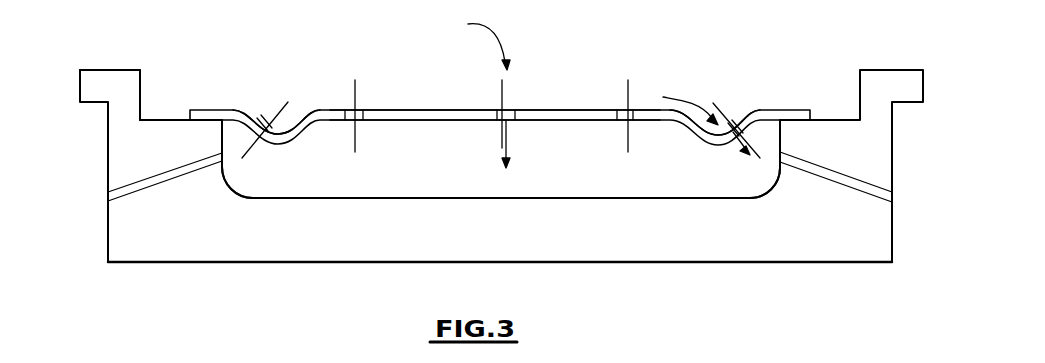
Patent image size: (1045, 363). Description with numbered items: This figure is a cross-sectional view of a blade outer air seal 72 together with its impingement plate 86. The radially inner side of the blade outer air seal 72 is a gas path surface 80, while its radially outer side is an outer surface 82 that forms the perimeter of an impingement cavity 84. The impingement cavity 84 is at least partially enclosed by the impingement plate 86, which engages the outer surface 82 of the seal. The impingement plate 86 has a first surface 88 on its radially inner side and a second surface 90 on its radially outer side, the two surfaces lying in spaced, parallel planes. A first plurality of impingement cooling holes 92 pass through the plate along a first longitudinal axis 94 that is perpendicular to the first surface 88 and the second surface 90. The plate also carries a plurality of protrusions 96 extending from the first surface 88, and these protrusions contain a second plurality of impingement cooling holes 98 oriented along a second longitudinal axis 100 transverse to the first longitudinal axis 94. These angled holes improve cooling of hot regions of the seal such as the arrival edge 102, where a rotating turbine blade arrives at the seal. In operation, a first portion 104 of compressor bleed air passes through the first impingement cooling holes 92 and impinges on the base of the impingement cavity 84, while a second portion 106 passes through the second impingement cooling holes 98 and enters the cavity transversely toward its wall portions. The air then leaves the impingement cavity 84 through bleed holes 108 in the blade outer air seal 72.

The blade outer air seal 72 is at (855, 216).
The gas path surface 80 is at (795, 263).
The outer surface 82 is at (159, 119).
The impingement cavity 84 is at (262, 178).
The impingement plate 86 is at (410, 109).
The first surface 88 is at (448, 121).
The second surface 90 is at (527, 109).
The first plurality of impingement cooling holes 92 is at (363, 109).
The first longitudinal axis 94 is at (355, 80).
The plurality of protrusions 96 is at (287, 143).
The second plurality of impingement cooling holes 98 is at (266, 112).
The second longitudinal axis 100 is at (287, 105).
The arrival edge 102 is at (102, 270).
The first portion of bleed air 104 is at (493, 23).
The second portion of bleed air 106 is at (685, 100).
The bleed holes 108 is at (140, 181).